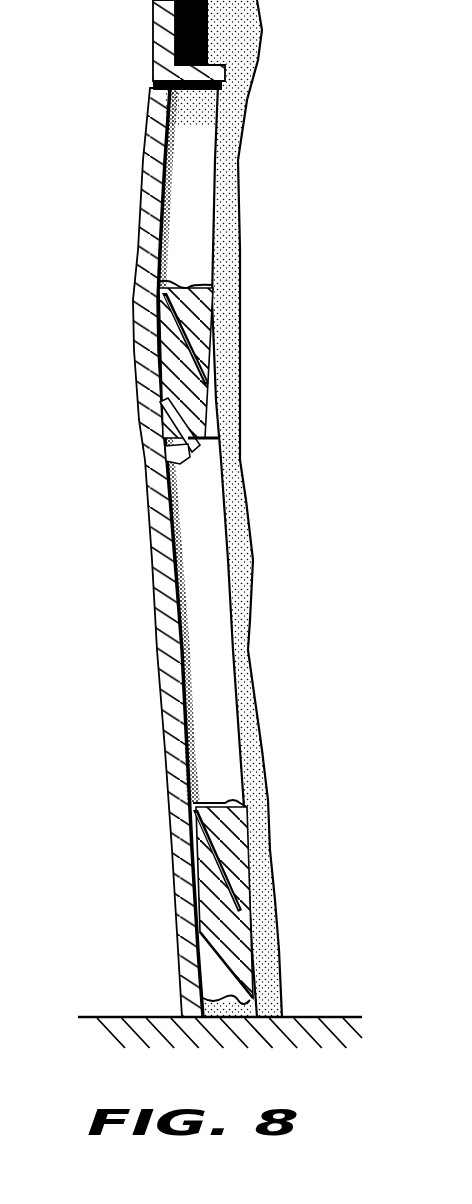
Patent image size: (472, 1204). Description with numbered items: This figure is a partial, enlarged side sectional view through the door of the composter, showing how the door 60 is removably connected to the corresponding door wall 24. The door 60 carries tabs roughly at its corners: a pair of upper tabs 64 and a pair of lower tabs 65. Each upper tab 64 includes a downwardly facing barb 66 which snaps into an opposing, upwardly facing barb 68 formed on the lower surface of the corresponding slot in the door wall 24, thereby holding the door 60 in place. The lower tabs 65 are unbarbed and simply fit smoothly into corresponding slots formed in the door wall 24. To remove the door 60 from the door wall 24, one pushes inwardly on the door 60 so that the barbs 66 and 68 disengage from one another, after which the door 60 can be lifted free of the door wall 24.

The door wall 24 is at (150, 32).
The door 60 is at (138, 410).
The upper tab 64 is at (150, 340).
The lower tab 65 is at (207, 892).
The downwardly facing barb 66 is at (147, 440).
The upwardly facing barb 68 is at (140, 395).